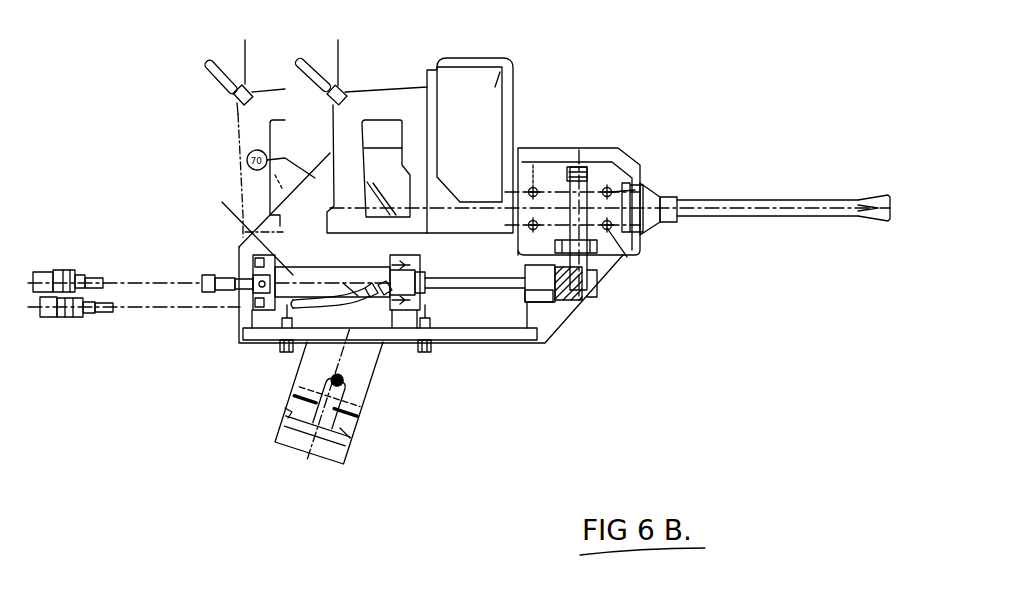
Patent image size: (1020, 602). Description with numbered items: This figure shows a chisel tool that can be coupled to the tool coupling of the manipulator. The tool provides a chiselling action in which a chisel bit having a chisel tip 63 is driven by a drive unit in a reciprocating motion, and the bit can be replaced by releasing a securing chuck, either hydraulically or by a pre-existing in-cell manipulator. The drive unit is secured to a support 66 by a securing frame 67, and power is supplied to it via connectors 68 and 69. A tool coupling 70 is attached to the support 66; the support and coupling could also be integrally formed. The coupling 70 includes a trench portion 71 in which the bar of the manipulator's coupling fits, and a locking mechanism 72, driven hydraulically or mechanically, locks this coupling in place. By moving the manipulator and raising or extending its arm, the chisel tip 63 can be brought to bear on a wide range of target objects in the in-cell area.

The chisel tip 63 is at (883, 214).
The support 66 is at (557, 320).
The securing frame 67 is at (598, 173).
The connector 68 is at (252, 286).
The connector 69 is at (353, 305).
The tool coupling 70 is at (343, 437).
The trench portion 71 is at (349, 440).
The locking mechanism 72 is at (292, 412).